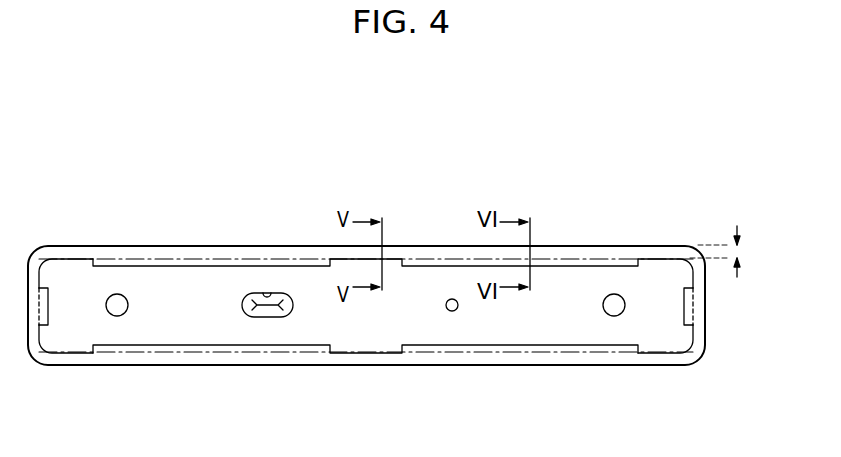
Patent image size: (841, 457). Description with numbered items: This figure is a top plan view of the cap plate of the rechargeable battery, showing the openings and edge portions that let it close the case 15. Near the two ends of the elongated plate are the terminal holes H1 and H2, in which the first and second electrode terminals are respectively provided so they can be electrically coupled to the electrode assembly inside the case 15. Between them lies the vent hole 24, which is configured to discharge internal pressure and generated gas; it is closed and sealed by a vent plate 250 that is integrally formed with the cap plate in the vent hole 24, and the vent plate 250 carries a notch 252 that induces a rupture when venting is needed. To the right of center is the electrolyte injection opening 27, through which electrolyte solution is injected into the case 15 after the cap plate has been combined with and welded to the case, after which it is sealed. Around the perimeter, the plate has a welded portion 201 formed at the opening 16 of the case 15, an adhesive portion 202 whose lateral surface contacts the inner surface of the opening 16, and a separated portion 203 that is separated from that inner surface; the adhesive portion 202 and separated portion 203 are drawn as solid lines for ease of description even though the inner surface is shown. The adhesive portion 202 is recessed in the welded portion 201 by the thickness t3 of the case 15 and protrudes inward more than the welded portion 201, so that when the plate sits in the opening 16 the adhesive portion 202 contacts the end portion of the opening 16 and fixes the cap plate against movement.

The case 15 is at (366, 254).
The opening 16 is at (440, 260).
The vent hole 24 is at (267, 292).
The electrolyte injection opening 27 is at (452, 311).
The welded portion 201 is at (616, 252).
The adhesive portion 202 is at (666, 256).
The separated portion 203 is at (571, 265).
The vent plate 250 is at (278, 314).
The notch 252 is at (263, 309).
The terminal hole H1 is at (117, 317).
The terminal hole H2 is at (615, 316).
The thickness of the case t3 is at (727, 251).